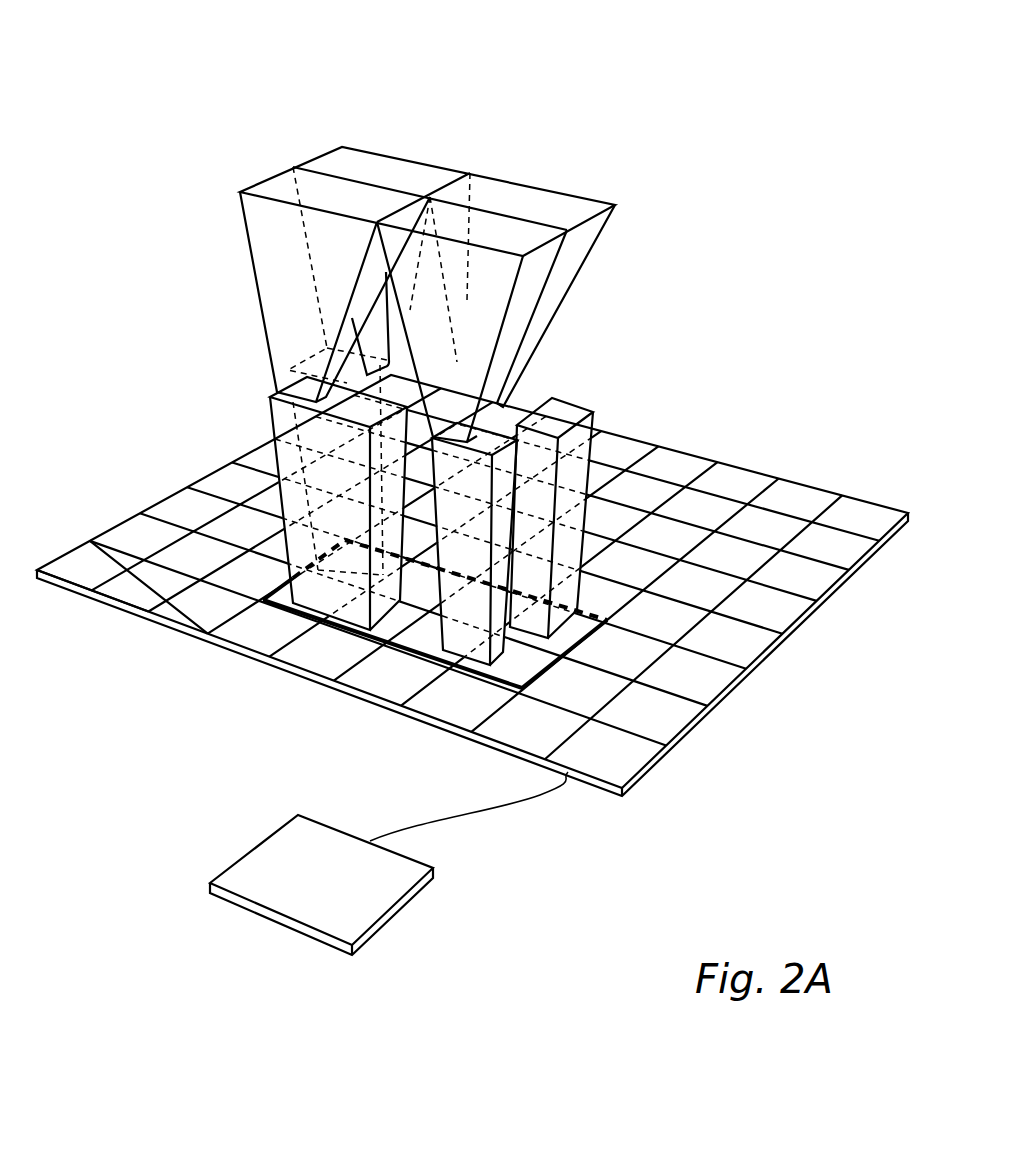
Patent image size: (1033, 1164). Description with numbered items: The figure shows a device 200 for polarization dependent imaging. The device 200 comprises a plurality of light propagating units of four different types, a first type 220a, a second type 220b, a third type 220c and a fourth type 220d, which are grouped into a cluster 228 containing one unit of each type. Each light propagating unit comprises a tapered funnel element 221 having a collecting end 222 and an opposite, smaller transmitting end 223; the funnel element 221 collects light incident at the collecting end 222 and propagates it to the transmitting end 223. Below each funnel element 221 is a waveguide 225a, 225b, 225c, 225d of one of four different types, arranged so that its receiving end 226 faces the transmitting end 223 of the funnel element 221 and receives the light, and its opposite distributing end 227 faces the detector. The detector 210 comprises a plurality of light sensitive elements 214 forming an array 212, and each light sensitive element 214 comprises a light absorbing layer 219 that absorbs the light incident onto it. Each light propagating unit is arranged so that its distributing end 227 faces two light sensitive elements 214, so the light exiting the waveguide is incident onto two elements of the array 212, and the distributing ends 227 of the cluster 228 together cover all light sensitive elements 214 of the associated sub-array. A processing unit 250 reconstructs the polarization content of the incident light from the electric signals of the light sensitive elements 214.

The device 200 is at (711, 93).
The detector 210 is at (460, 571).
The array of light sensitive elements 212 is at (619, 758).
The light sensitive element 214 is at (93, 575).
The light absorbing layer 219 is at (853, 513).
The light propagating unit of first type 220a is at (325, 131).
The light propagating unit of second type 220b is at (568, 241).
The light propagating unit of third type 220c is at (214, 343).
The light propagating unit of fourth type 220d is at (441, 676).
The funnel element 221 is at (540, 268).
The collecting end 222 is at (535, 233).
The transmitting end 223 is at (508, 398).
The waveguide of first type 225a is at (293, 435).
The waveguide of second type 225b is at (565, 495).
The waveguide of third type 225c is at (293, 502).
The waveguide of fourth type 225d is at (437, 650).
The receiving end 226 is at (500, 406).
The distributing end 227 is at (522, 690).
The cluster 228 is at (280, 151).
The processing unit 250 is at (365, 905).